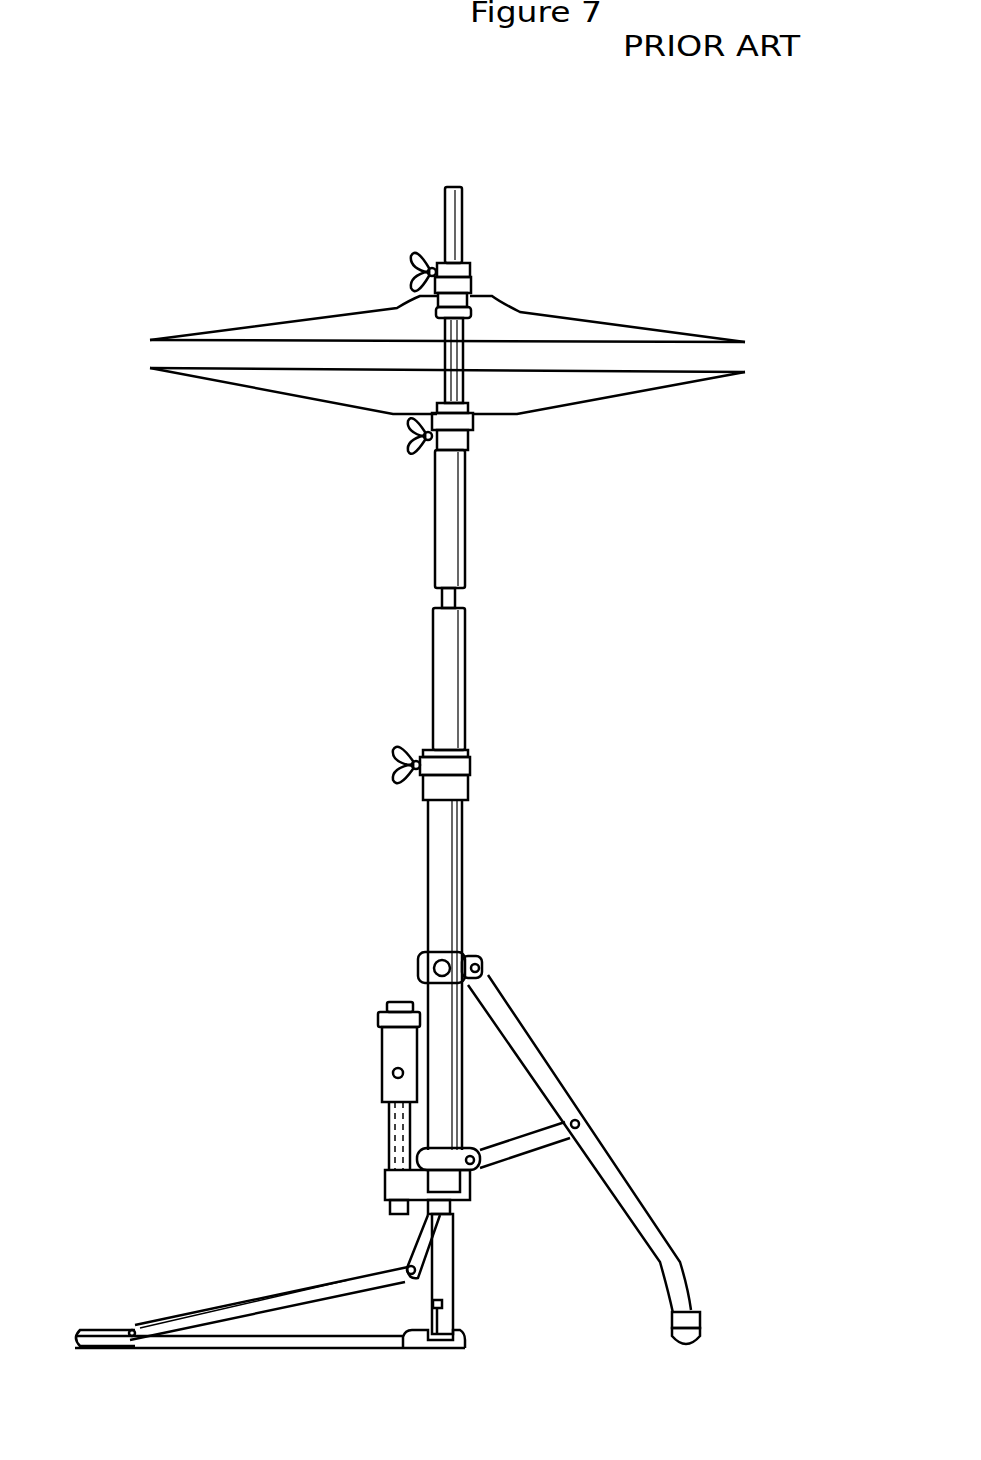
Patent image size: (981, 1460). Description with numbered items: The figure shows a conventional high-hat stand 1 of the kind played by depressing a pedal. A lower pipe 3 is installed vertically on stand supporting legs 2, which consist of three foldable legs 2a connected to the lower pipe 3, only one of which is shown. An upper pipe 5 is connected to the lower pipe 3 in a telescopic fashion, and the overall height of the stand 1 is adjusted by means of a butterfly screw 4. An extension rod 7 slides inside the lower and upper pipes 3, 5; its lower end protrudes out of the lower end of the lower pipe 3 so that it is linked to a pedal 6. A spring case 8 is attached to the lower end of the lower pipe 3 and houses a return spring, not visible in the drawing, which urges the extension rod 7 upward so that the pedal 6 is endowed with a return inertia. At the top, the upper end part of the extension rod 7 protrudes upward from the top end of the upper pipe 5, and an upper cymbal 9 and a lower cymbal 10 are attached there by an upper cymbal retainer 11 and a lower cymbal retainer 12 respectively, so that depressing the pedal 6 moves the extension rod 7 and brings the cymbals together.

The high-hat stand 1 is at (210, 843).
The stand supporting legs 2 is at (620, 1155).
The foldable leg 2a is at (548, 1072).
The lower pipe 3 is at (462, 865).
The butterfly screw 4 is at (403, 785).
The upper pipe 5 is at (460, 678).
The pedal 6 is at (220, 1307).
The extension rod 7 is at (462, 202).
The spring case 8 is at (387, 1132).
The upper cymbal 9 is at (682, 333).
The lower cymbal 10 is at (681, 388).
The upper cymbal retainer 11 is at (487, 264).
The lower cymbal retainer 12 is at (476, 424).